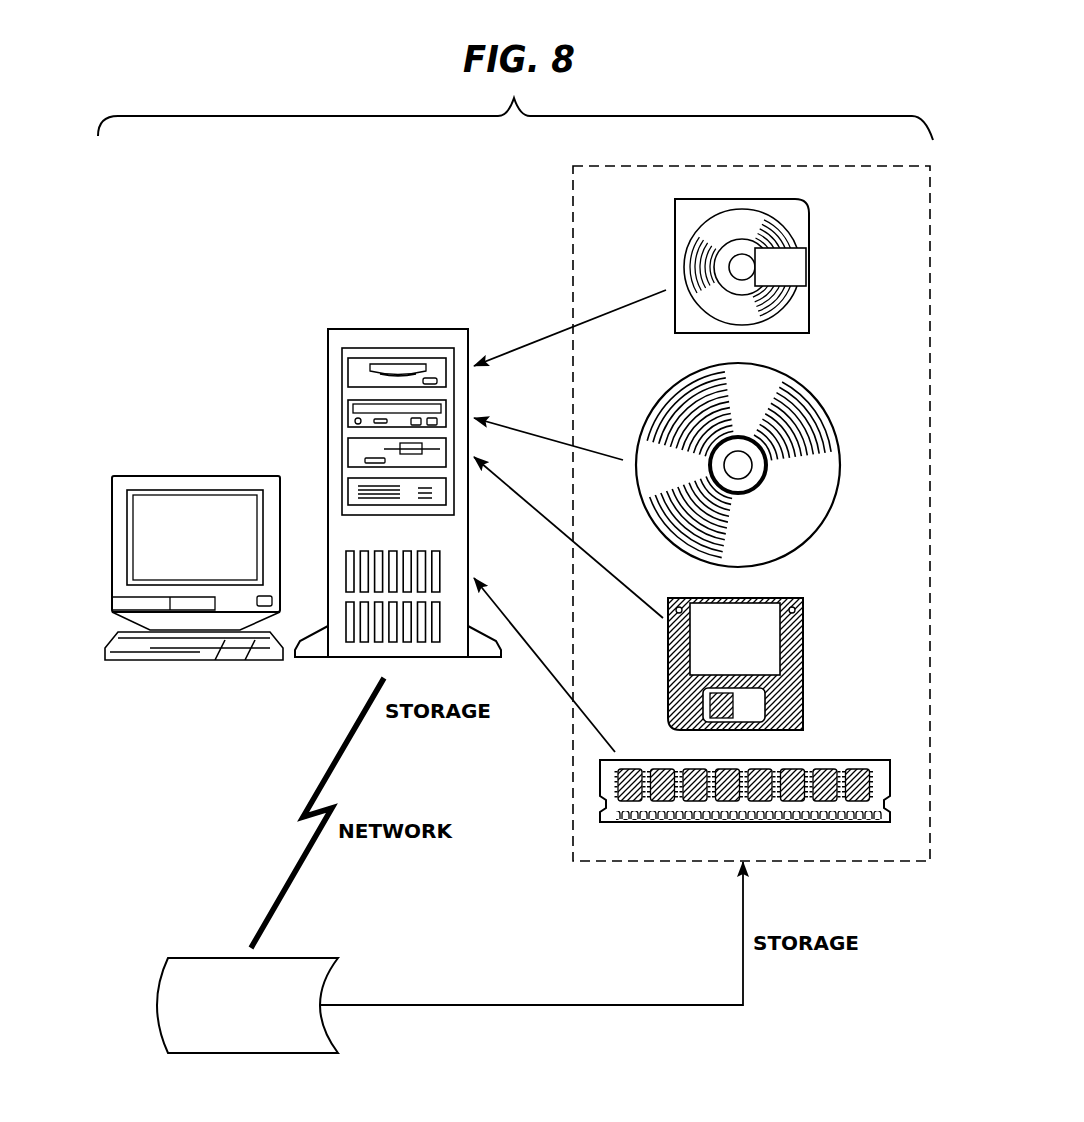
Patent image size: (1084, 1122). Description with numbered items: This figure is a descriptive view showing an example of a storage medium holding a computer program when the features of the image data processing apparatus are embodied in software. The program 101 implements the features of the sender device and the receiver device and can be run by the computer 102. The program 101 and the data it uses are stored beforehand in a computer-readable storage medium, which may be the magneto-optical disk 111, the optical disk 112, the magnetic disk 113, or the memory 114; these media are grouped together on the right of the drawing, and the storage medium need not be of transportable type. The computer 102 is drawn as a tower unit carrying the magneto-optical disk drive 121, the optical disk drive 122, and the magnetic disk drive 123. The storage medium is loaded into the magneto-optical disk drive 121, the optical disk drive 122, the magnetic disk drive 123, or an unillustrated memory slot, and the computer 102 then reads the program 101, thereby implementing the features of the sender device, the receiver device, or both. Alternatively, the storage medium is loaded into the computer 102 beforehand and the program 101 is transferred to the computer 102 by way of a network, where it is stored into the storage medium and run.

The program 101 is at (152, 1005).
The computer 102 is at (397, 329).
The magneto-optical disk 111 is at (810, 232).
The optical disk 112 is at (843, 463).
The magnetic disk 113 is at (805, 660).
The memory 114 is at (840, 760).
The magneto-optical disk drive 121 is at (348, 376).
The optical disk drive 122 is at (348, 414).
The magnetic disk drive 123 is at (348, 455).